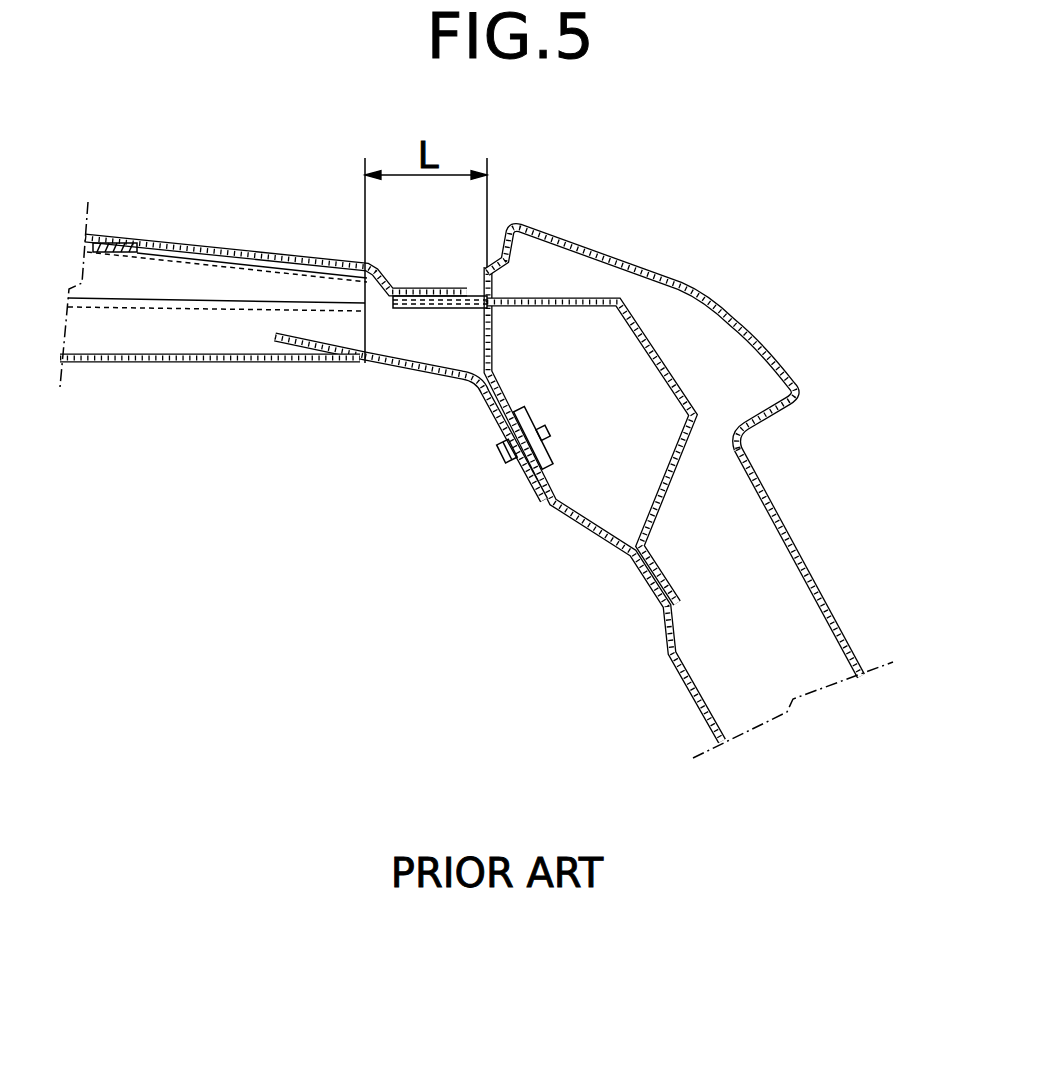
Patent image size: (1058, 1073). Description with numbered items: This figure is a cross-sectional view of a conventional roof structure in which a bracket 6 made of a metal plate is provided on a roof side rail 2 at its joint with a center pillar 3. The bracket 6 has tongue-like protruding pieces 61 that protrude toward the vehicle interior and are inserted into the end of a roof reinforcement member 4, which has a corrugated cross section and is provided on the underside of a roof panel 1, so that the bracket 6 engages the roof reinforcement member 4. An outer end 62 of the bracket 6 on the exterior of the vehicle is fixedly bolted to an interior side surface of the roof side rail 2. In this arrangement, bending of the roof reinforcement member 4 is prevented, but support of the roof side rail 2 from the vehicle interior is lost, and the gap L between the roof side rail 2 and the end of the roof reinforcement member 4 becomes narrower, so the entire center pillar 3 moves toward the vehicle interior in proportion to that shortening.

The roof panel 1 is at (204, 240).
The roof side rail 2 is at (712, 297).
The center pillar 3 is at (797, 540).
The roof reinforcement member 4 is at (175, 335).
The bracket 6 is at (408, 380).
The protruding piece 61 is at (298, 347).
The outer end 62 is at (523, 470).